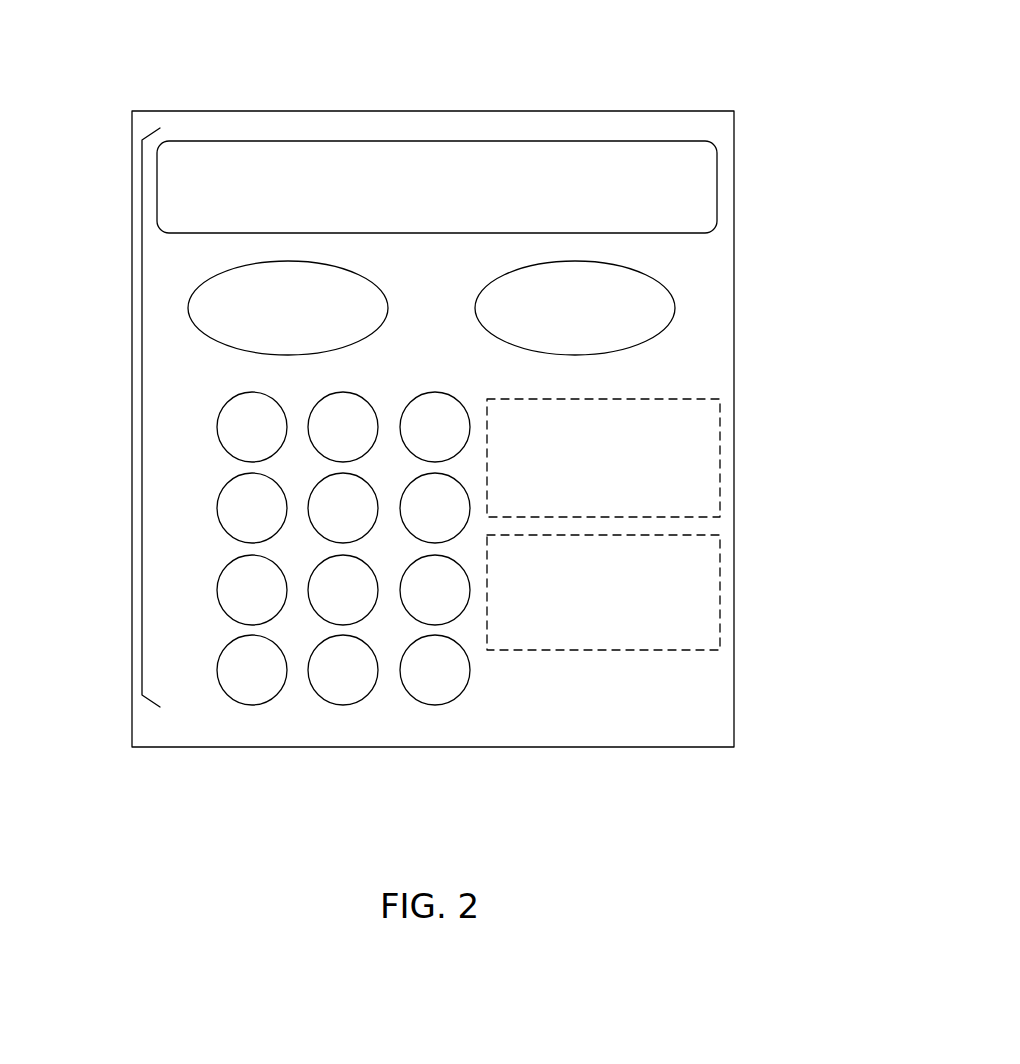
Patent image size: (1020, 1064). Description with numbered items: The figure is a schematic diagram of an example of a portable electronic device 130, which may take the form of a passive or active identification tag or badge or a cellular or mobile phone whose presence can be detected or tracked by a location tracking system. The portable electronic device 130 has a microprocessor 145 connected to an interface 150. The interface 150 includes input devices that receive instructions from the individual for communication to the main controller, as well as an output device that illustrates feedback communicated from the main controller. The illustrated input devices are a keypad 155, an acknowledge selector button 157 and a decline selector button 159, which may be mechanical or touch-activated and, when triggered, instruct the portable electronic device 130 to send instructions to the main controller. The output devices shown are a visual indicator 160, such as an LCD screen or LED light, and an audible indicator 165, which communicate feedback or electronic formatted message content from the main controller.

The portable electronic device 130 is at (606, 92).
The interface 150 is at (142, 378).
The keypad 155 is at (293, 695).
The acknowledge selector button 157 is at (190, 300).
The decline selector button 159 is at (676, 308).
The visual indicator 160 is at (670, 198).
The microprocessor 145 is at (665, 400).
The audible indicator 165 is at (720, 592).